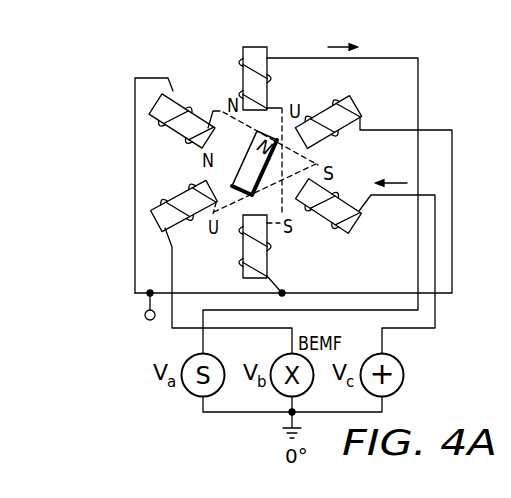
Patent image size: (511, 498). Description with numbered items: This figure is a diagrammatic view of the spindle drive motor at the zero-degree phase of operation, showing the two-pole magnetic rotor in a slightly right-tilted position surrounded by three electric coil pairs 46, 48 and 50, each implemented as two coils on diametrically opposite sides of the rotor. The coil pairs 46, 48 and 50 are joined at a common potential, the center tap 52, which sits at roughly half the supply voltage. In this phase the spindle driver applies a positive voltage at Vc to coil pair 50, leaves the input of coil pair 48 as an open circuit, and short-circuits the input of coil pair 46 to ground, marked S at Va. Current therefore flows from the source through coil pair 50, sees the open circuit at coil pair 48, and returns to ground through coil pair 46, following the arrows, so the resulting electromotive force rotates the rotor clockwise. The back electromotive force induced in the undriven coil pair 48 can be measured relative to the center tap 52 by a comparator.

The coil pair 46 is at (268, 64).
The coil pair 48 is at (172, 230).
The coil pair 50 is at (355, 225).
The center tap 52 is at (150, 322).